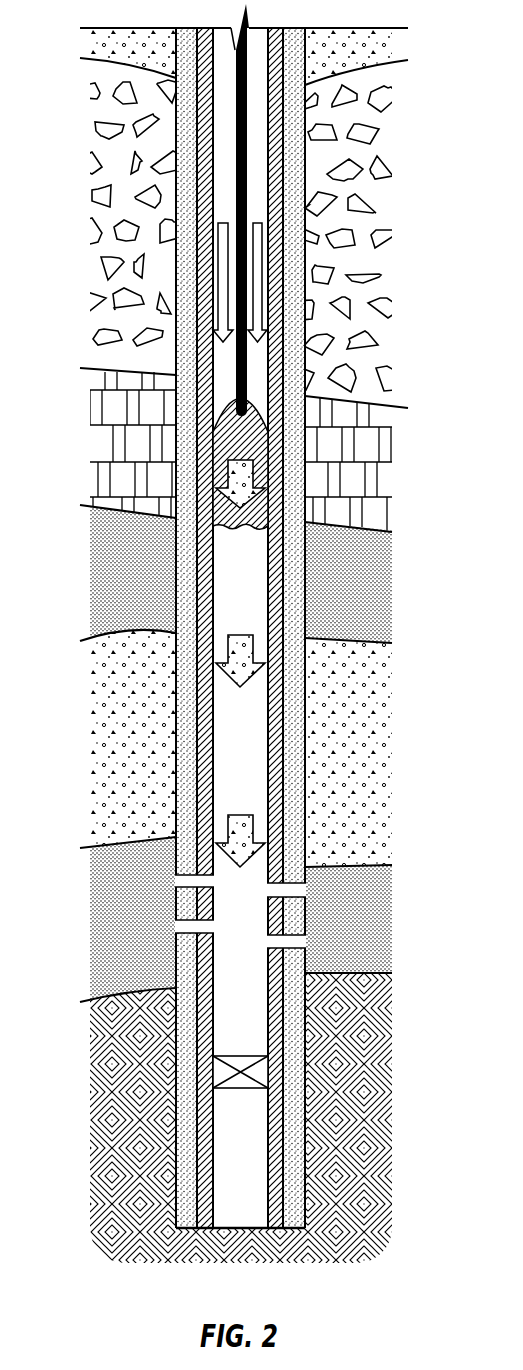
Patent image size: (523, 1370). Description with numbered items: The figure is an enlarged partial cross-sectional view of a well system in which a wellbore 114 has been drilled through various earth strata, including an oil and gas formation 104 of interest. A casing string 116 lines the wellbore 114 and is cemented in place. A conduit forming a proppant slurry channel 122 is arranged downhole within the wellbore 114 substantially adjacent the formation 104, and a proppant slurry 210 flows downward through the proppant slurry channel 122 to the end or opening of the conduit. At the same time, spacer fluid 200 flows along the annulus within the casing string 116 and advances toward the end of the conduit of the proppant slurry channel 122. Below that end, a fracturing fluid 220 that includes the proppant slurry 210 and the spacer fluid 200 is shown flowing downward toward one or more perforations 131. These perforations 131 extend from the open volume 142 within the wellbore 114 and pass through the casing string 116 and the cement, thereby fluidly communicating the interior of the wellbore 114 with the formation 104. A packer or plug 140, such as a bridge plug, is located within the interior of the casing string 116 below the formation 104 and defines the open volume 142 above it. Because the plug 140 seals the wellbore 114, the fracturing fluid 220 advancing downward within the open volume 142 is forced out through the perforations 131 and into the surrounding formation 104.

The formation 104 is at (372, 926).
The wellbore 114 is at (176, 175).
The casing string 116 is at (277, 817).
The proppant slurry channel 122 is at (247, 142).
The perforations 131 is at (293, 943).
The plug 140 is at (257, 1072).
The open volume 142 is at (240, 795).
The spacer fluid 200 is at (257, 252).
The proppant slurry 210 is at (247, 297).
The fracturing fluid 220 is at (240, 443).